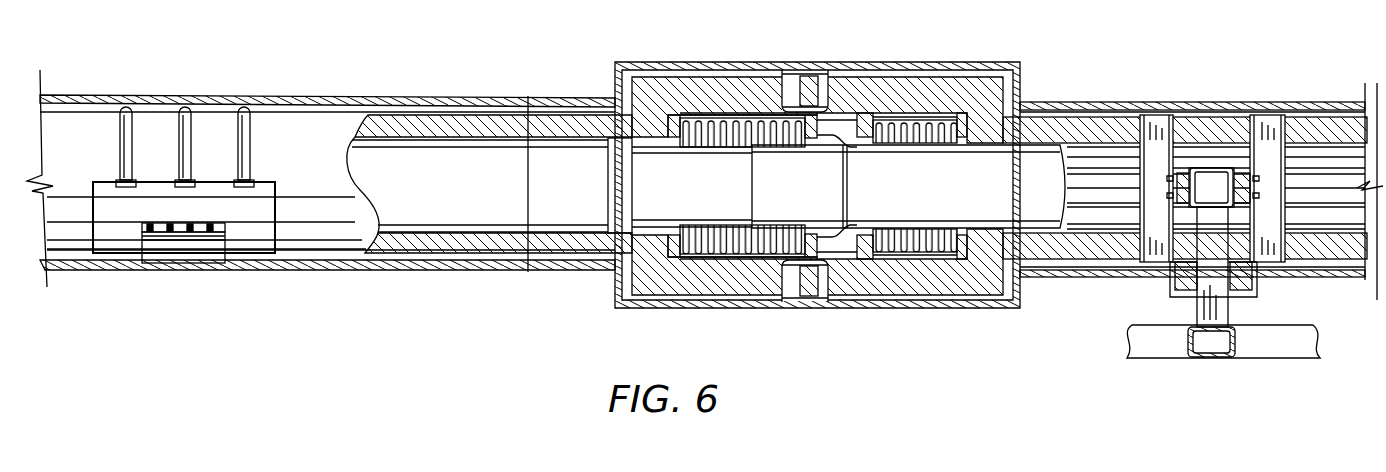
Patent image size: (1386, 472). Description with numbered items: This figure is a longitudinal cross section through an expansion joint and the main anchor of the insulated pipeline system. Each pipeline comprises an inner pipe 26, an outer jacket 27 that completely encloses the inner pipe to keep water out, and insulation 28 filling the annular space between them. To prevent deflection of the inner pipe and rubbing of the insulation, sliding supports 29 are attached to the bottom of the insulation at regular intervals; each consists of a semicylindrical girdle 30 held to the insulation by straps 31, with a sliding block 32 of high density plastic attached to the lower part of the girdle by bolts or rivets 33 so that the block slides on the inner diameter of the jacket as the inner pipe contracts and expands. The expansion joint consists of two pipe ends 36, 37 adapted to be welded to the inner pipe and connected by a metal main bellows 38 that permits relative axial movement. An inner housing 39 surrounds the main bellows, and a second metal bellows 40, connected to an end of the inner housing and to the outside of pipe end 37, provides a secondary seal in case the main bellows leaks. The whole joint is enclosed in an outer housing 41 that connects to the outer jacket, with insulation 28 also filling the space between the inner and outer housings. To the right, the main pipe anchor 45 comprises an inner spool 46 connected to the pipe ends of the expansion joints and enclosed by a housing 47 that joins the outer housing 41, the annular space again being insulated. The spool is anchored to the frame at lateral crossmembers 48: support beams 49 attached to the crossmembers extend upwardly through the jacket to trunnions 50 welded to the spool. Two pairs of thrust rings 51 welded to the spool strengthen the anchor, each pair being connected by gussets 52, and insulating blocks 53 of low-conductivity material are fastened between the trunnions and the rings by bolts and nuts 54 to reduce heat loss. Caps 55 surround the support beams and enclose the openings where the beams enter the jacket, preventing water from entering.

The inner pipe 26 is at (414, 232).
The outer jacket 27 is at (357, 97).
The insulation 28 is at (427, 115).
The sliding support 29 is at (266, 218).
The semicylindrical girdle 30 is at (270, 182).
The straps 31 is at (128, 110).
The sliding block 32 is at (215, 247).
The bolts or rivets 33 is at (152, 226).
The pipe end 36 is at (548, 148).
The pipe end 37 is at (1041, 143).
The main bellows 38 is at (699, 120).
The inner housing 39 is at (757, 113).
The second bellows 40 is at (900, 113).
The outer housing 41 is at (849, 63).
The main pipe anchor 45 is at (1118, 103).
The inner spool 46 is at (1308, 140).
The housing 47 is at (1218, 103).
The lateral crossmembers 48 is at (1238, 340).
The support beams 49 is at (1195, 312).
The trunnions 50 is at (1212, 212).
The thrust rings 51 is at (1243, 150).
The gussets 52 is at (1157, 115).
The insulating blocks 53 is at (1176, 203).
The bolts and nuts 54 is at (1165, 181).
The caps 55 is at (1256, 290).